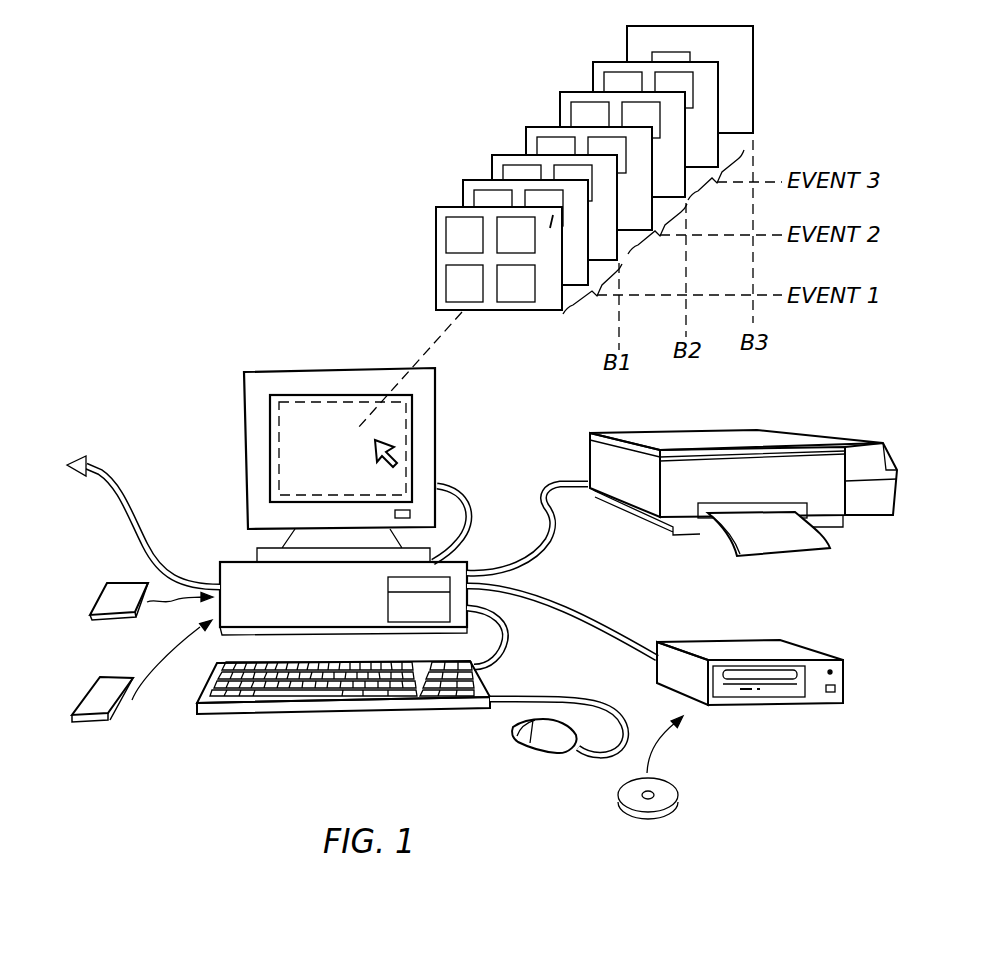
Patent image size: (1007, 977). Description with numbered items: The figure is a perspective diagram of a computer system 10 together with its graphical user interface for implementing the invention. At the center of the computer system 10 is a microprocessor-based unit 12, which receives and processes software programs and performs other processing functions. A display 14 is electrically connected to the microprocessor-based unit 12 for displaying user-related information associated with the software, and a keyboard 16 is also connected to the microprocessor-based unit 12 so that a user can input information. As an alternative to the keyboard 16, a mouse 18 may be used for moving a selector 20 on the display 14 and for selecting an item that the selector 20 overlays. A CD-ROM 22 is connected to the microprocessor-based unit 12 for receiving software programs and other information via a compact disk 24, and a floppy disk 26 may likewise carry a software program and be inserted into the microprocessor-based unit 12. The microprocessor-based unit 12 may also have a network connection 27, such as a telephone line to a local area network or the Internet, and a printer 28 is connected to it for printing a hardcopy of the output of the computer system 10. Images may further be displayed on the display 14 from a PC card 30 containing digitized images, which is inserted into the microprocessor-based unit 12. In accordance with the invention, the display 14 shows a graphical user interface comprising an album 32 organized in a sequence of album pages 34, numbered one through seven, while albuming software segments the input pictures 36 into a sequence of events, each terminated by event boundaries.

The computer system 10 is at (200, 370).
The microprocessor-based unit 12 is at (233, 562).
The display 14 is at (357, 368).
The keyboard 16 is at (290, 712).
The mouse 18 is at (543, 752).
The selector 20 is at (393, 446).
The compact disk-read only memory (CD-ROM) 22 is at (707, 640).
The compact disk 24 is at (678, 790).
The floppy disk 26 is at (115, 580).
The network connection 27 is at (120, 473).
The printer 28 is at (658, 430).
The personal computer card (PC card) 30 is at (117, 712).
The album 32 is at (302, 400).
The album pages 34 is at (510, 155).
The input pictures 36 is at (458, 227).